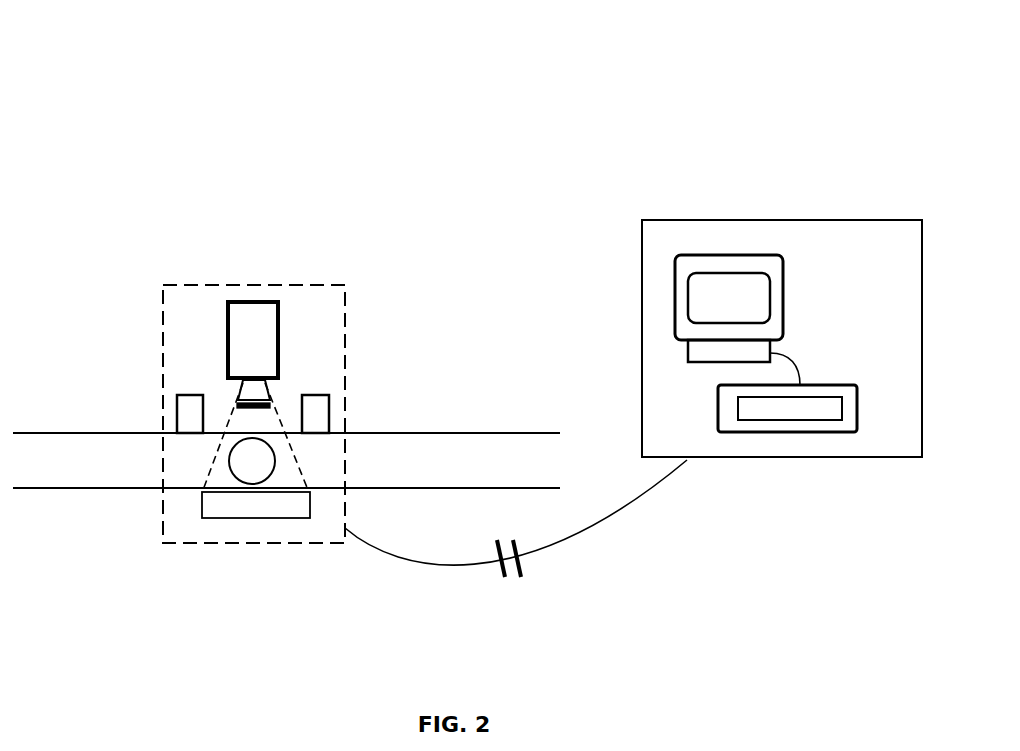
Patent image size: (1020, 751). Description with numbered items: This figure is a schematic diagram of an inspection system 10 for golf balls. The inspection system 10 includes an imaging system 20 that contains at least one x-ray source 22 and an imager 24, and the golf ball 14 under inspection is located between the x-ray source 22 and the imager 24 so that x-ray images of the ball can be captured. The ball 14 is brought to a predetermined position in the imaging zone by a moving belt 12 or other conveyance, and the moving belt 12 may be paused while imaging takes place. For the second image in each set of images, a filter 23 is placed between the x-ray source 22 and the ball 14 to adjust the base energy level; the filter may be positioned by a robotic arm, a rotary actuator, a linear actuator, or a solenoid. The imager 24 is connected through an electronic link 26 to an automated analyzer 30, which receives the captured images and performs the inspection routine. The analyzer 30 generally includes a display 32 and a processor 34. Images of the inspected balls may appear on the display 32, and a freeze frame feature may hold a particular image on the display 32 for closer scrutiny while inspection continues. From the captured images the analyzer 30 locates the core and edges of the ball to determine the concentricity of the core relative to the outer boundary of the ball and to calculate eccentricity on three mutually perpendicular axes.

The inspection system 10 is at (124, 89).
The moving belt 12 is at (34, 429).
The golf ball 14 is at (216, 467).
The imaging system 20 is at (204, 282).
The x-ray source 22 is at (293, 301).
The filter 23 is at (280, 401).
The imager 24 is at (263, 524).
The electronic link 26 is at (553, 553).
The automated analyzer 30 is at (676, 214).
The display 32 is at (783, 299).
The processor 34 is at (857, 411).